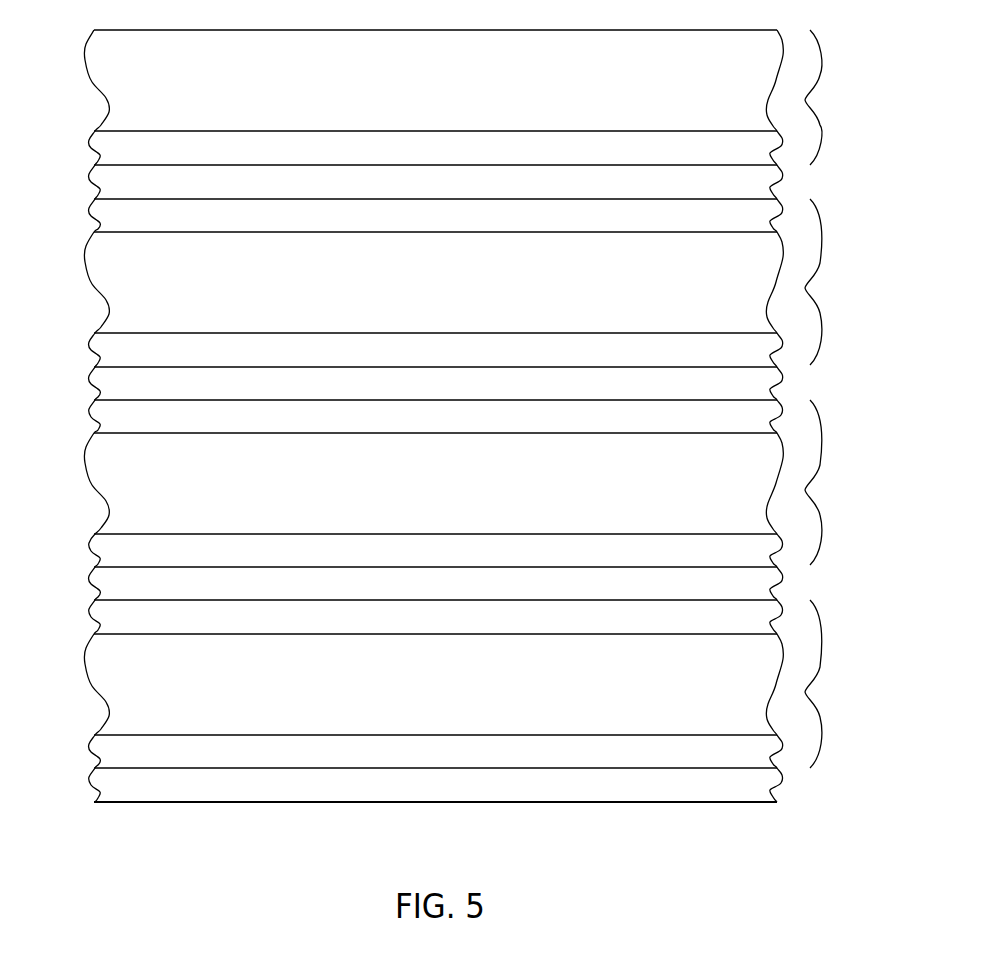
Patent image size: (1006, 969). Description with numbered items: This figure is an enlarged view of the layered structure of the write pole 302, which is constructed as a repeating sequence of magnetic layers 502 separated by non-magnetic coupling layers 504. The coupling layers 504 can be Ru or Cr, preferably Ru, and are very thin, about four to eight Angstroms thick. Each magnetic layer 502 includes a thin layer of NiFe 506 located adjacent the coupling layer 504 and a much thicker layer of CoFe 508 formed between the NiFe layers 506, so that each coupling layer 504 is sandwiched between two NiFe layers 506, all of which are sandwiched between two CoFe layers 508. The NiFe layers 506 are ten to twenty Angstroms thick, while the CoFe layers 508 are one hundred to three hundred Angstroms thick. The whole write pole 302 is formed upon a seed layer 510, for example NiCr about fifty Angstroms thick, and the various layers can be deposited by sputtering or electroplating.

The write pole 302 is at (880, 381).
The magnetic layer 502 is at (821, 83).
The non-magnetic coupling layer 504 is at (505, 181).
The NiFe layer 506 is at (505, 149).
The CoFe layer 508 is at (505, 86).
The seed layer 510 is at (505, 782).